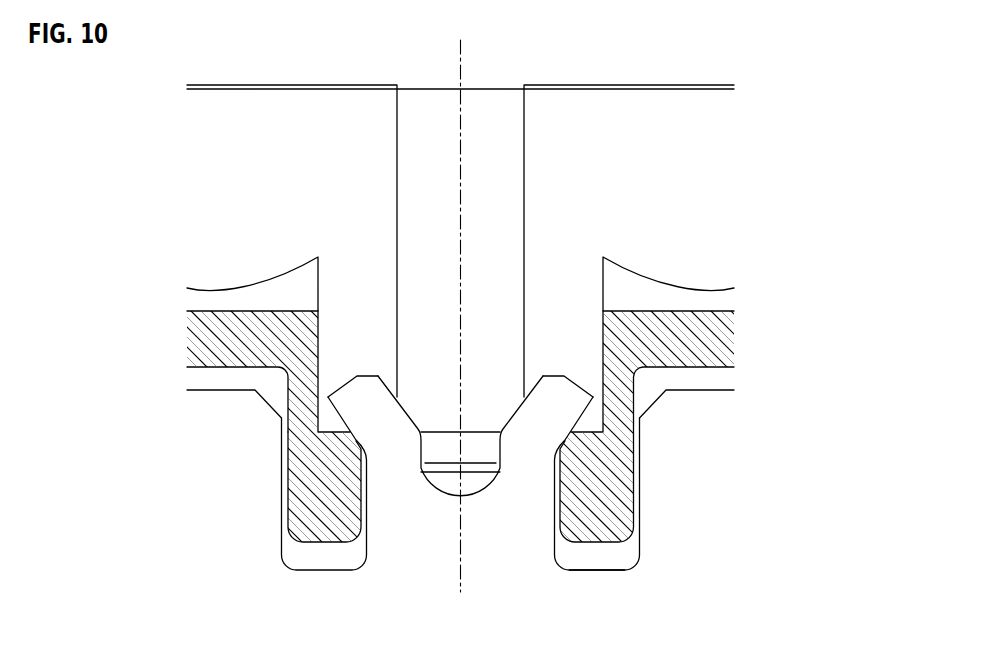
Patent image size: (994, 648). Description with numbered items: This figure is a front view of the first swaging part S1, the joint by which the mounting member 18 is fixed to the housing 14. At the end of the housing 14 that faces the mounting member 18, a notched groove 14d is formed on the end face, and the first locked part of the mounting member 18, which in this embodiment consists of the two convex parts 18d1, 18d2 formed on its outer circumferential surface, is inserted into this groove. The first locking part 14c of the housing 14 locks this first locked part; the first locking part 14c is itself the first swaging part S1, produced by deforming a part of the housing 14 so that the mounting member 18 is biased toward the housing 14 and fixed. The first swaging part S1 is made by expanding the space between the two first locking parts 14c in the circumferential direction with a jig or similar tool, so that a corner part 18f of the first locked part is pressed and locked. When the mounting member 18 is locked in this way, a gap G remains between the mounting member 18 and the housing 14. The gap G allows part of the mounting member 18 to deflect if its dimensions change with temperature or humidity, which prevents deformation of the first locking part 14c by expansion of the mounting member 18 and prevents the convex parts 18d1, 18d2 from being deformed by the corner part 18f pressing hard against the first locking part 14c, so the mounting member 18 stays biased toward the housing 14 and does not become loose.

The mounting member 18 is at (620, 145).
The first swaging part S1 is at (441, 402).
The first locking part 14c is at (362, 397).
The corner part 18f is at (562, 442).
The housing 14 is at (230, 442).
The notched groove 14d is at (300, 549).
The convex part 18d1 is at (332, 517).
The convex part 18d2 is at (600, 523).
The gap G is at (618, 553).